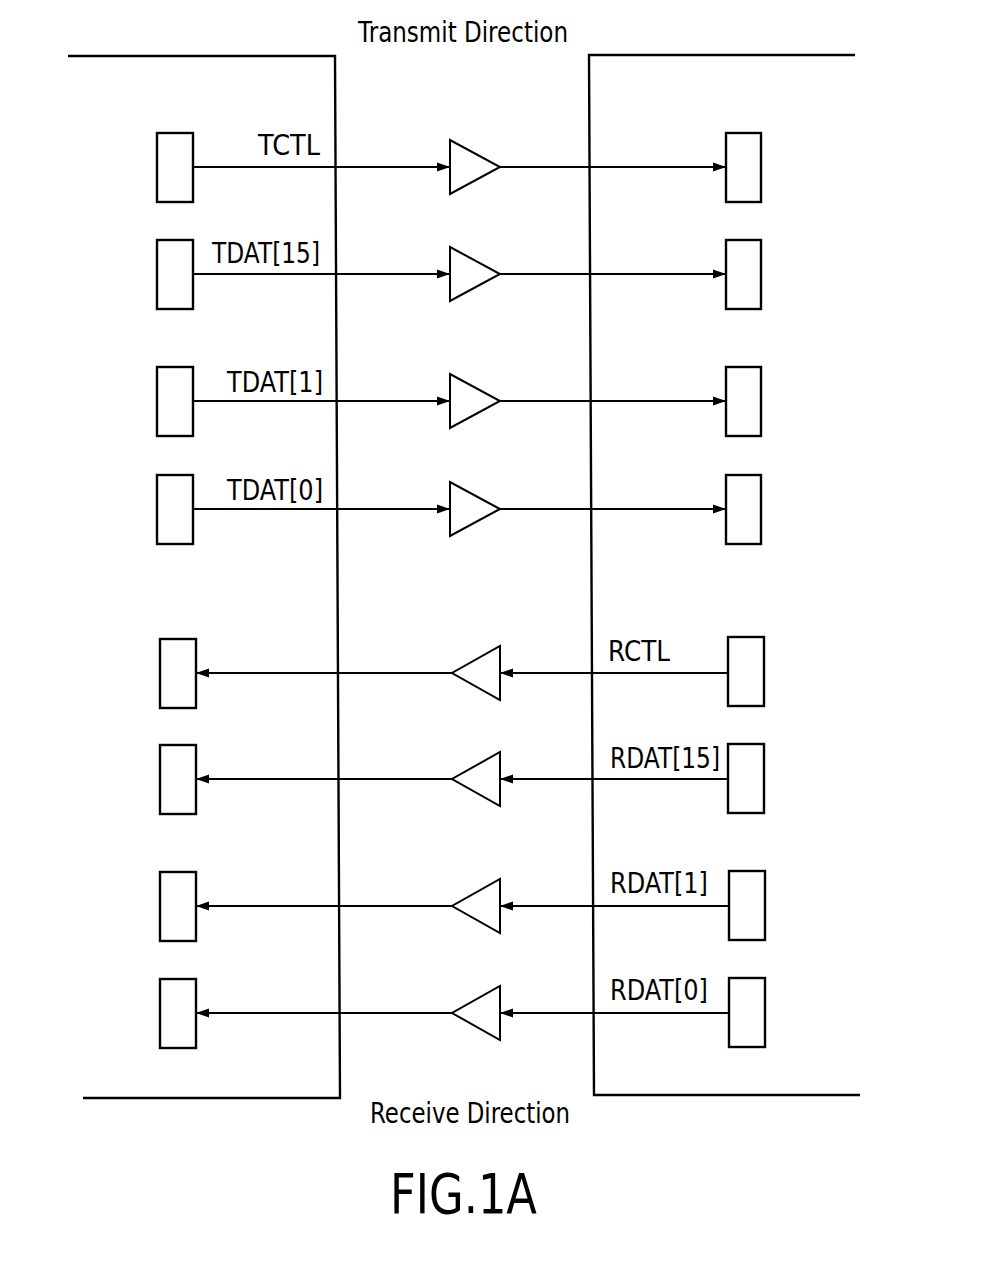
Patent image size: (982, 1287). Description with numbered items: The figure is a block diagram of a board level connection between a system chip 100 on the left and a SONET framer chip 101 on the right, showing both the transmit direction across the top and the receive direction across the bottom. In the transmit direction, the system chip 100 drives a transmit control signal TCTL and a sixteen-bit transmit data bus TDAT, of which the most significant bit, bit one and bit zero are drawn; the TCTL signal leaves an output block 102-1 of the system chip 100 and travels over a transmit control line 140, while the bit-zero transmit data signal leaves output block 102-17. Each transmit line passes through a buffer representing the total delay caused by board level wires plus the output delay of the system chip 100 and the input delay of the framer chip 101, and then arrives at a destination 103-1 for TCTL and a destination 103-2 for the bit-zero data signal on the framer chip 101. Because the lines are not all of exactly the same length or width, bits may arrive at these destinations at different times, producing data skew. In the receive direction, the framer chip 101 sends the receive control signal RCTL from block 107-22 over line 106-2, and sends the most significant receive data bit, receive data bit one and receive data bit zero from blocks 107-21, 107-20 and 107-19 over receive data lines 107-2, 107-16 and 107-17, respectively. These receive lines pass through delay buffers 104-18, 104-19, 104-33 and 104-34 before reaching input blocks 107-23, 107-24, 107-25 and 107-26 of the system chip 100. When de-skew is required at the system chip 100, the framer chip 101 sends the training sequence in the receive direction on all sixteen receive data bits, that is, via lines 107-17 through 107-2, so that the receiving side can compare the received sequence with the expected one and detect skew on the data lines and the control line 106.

The system chip 100 is at (173, 56).
The framer chip 101 is at (750, 55).
The system chip transmit output pin 102-1 is at (156, 168).
The system chip transmit output pin 102-17 is at (157, 510).
The destination 103-1 is at (761, 166).
The destination 103-2 is at (761, 508).
The receive buffer 104-18 is at (484, 654).
The receive buffer 104-19 is at (484, 760).
The receive buffer 104-33 is at (485, 888).
The receive buffer 104-34 is at (485, 993).
The control line 106 is at (204, 1169).
The receive control signal line 106-2 is at (543, 675).
The receive data line 107-2 is at (544, 781).
The receive data line 107-16 is at (545, 908).
The receive data line 107-17 is at (545, 1015).
The framer chip receive output pin 107-19 is at (765, 1012).
The framer chip receive output pin 107-20 is at (765, 905).
The framer chip receive output pin 107-21 is at (764, 778).
The framer chip receive output pin 107-22 is at (764, 672).
The system chip receive input pin 107-23 is at (160, 674).
The system chip receive input pin 107-24 is at (160, 780).
The system chip receive input pin 107-25 is at (160, 907).
The system chip receive input pin 107-26 is at (160, 1014).
The transmit signal line 140 is at (387, 156).